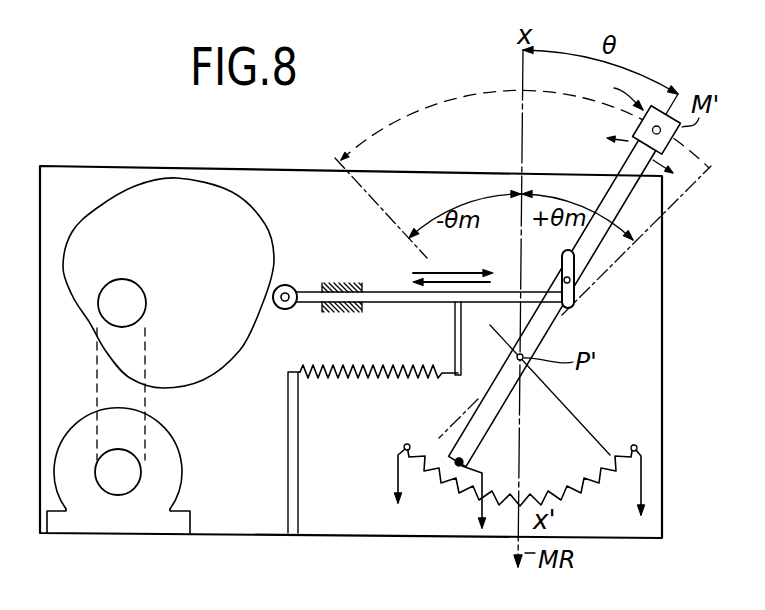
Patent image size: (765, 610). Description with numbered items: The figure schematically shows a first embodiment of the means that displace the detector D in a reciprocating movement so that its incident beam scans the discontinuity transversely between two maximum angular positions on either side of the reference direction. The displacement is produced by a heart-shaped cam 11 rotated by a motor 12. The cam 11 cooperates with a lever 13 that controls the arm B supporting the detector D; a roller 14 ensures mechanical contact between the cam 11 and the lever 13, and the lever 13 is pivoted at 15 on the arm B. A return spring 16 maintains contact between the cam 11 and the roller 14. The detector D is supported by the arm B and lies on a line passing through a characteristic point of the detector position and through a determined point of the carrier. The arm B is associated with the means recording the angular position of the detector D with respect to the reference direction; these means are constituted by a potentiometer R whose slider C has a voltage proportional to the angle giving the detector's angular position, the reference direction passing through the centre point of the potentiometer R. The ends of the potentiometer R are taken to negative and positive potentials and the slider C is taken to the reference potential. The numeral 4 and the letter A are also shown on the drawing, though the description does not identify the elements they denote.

The slider mass 4 is at (640, 127).
The heart-shaped cam 11 is at (193, 241).
The motor 12 is at (172, 463).
The lever 13 is at (383, 303).
The roller 14 is at (292, 286).
The pivot 15 is at (572, 281).
The return spring 16 is at (388, 377).
The housing A is at (663, 272).
The arm B is at (551, 326).
The slider C is at (450, 457).
The detector D is at (619, 90).
The potentiometer R is at (588, 478).